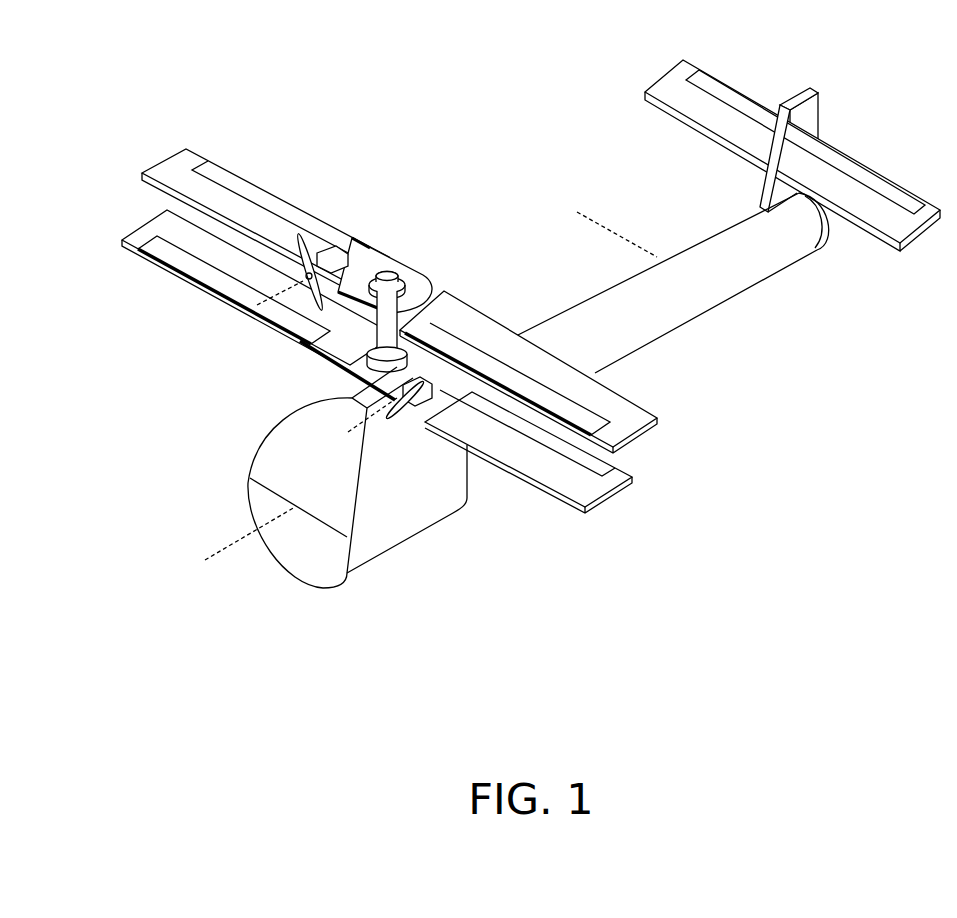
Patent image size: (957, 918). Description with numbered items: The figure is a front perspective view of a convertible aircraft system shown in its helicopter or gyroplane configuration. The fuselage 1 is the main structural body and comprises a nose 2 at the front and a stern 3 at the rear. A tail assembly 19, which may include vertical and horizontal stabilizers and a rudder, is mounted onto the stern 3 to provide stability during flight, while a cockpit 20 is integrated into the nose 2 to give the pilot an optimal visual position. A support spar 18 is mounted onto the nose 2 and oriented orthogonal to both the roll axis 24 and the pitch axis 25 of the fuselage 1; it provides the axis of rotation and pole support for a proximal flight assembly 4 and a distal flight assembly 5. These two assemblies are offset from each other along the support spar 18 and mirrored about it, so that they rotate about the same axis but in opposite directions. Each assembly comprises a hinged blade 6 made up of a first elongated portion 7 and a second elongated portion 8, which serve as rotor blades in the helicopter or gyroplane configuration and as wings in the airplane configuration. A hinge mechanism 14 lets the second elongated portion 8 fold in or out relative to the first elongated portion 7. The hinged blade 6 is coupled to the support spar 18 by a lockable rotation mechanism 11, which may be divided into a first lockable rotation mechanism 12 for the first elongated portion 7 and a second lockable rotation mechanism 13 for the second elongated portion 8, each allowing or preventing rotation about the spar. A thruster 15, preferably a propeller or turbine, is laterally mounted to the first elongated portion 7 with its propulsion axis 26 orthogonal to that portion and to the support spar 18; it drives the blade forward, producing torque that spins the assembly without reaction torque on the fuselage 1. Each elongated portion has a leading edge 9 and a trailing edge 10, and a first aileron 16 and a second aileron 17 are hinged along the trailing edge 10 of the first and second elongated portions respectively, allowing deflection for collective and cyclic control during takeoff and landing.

The fuselage 1 is at (718, 232).
The nose 2 is at (298, 526).
The stern 3 is at (792, 197).
The proximal flight assembly 4 is at (371, 354).
The distal flight assembly 5 is at (118, 127).
The hinged blade 6 is at (371, 325).
The first elongated portion 7 is at (190, 155).
The second elongated portion 8 is at (635, 418).
The leading edge 9 is at (155, 192).
The trailing edge 10 is at (377, 245).
The lockable rotation mechanism 11 is at (395, 333).
The first lockable rotation mechanism 12 is at (350, 398).
The second lockable rotation mechanism 13 is at (413, 277).
The hinge mechanism 14 is at (437, 293).
The thruster 15 is at (335, 245).
The first aileron 16 is at (278, 198).
The second aileron 17 is at (532, 385).
The support spar 18 is at (378, 333).
The tail assembly 19 is at (792, 155).
The cockpit 20 is at (258, 455).
The roll axis 24 is at (230, 543).
The pitch axis 25 is at (587, 212).
The propulsion axis 26 is at (267, 307).